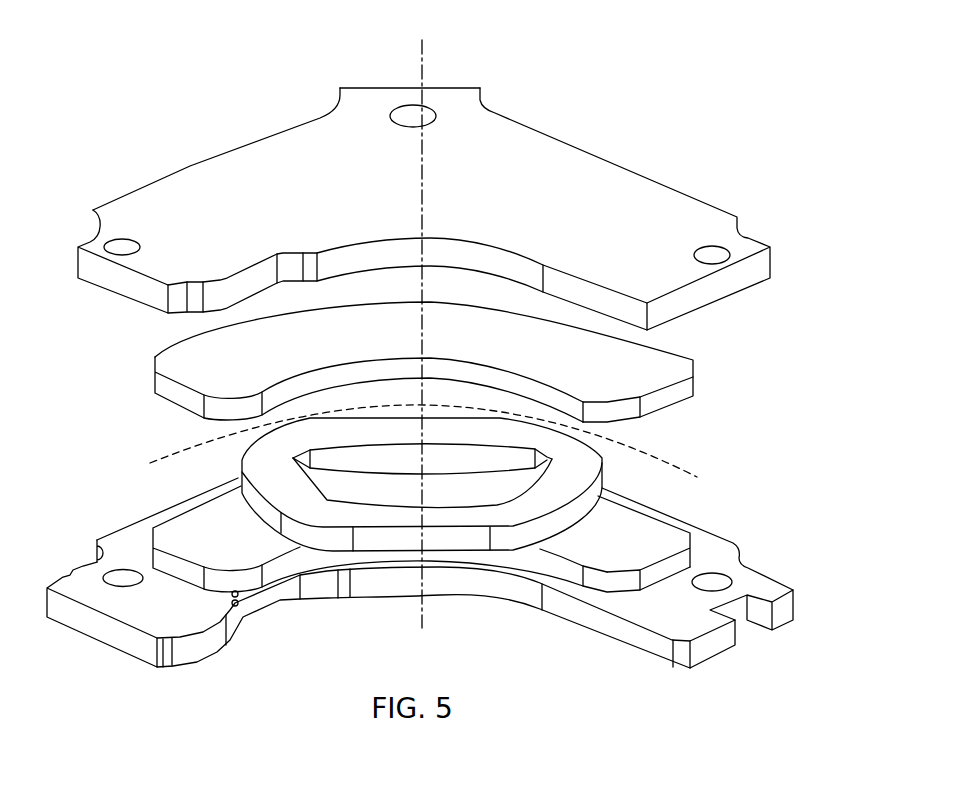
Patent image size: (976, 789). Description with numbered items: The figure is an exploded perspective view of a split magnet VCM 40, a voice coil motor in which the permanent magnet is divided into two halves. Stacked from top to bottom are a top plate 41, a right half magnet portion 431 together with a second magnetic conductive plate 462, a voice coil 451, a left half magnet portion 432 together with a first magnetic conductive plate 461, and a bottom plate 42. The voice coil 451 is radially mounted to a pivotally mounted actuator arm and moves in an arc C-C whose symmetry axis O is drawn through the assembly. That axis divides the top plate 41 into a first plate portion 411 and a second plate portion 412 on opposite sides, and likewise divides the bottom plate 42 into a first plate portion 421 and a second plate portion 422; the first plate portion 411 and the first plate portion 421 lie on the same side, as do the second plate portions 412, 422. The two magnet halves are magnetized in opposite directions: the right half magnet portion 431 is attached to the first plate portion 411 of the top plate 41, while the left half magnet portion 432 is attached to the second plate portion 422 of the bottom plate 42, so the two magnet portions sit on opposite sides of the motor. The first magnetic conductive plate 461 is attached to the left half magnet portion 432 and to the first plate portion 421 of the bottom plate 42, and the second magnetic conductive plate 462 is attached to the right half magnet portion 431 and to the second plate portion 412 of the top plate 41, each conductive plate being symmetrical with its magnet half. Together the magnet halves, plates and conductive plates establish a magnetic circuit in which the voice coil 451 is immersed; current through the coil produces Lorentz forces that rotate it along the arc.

The split magnet VCM 40 is at (628, 66).
The top plate 41 is at (460, 209).
The first plate portion 411 is at (615, 203).
The second plate portion 412 is at (243, 217).
The bottom plate 42 is at (693, 598).
The first plate portion 421 is at (555, 582).
The second plate portion 422 is at (200, 600).
The right half magnet portion 431 is at (442, 362).
The left half magnet portion 432 is at (182, 543).
The voice coil 451 is at (583, 458).
The first magnetic conductive plate 461 is at (182, 362).
The second magnetic conductive plate 462 is at (647, 542).